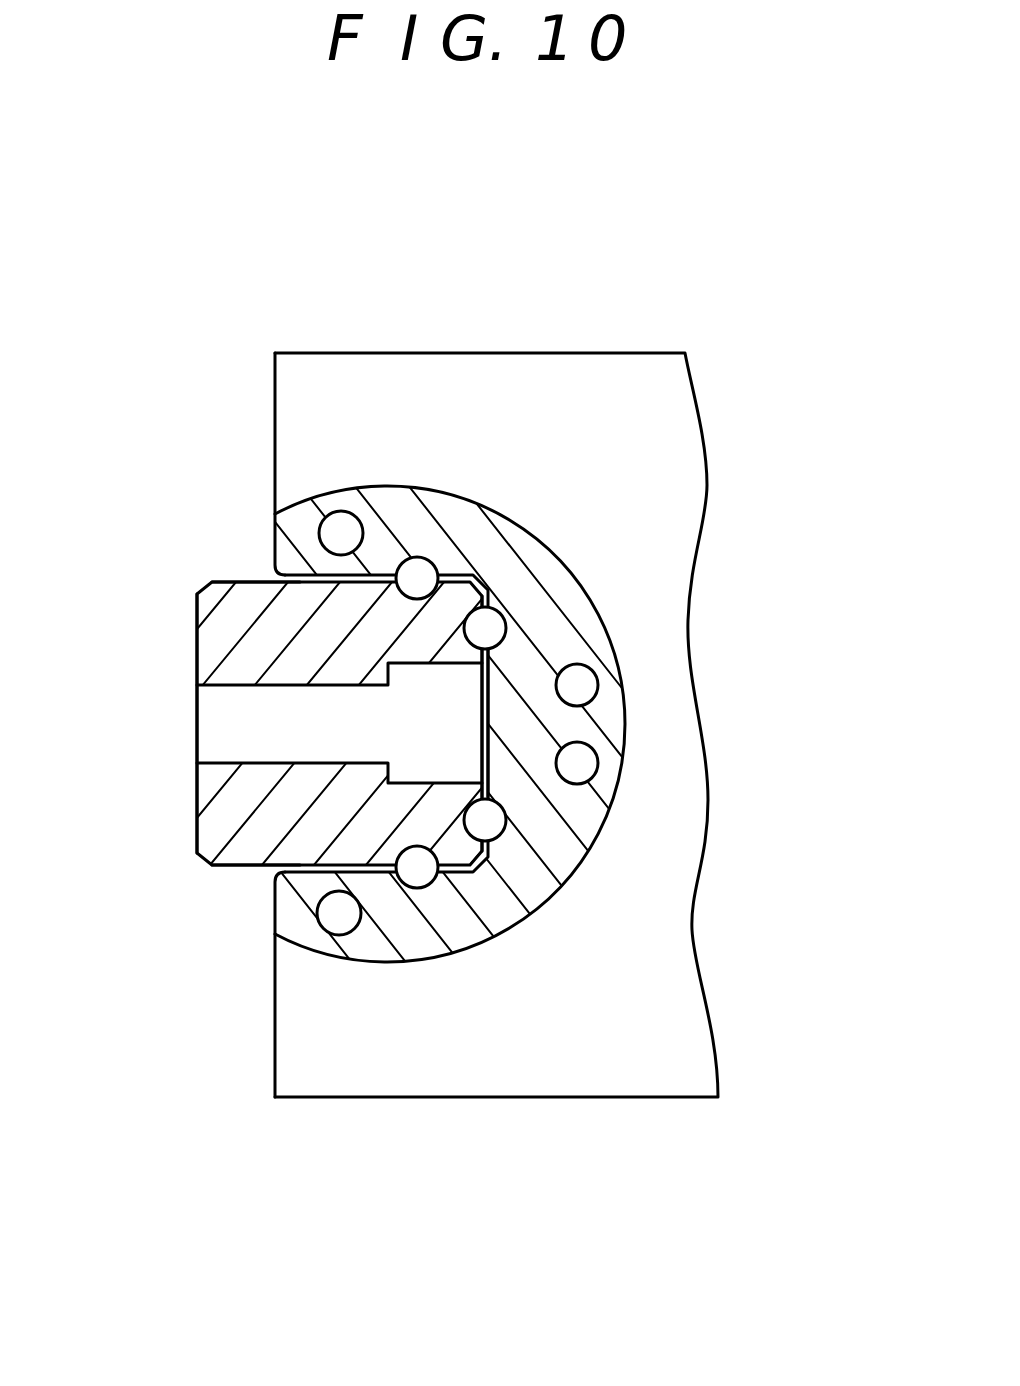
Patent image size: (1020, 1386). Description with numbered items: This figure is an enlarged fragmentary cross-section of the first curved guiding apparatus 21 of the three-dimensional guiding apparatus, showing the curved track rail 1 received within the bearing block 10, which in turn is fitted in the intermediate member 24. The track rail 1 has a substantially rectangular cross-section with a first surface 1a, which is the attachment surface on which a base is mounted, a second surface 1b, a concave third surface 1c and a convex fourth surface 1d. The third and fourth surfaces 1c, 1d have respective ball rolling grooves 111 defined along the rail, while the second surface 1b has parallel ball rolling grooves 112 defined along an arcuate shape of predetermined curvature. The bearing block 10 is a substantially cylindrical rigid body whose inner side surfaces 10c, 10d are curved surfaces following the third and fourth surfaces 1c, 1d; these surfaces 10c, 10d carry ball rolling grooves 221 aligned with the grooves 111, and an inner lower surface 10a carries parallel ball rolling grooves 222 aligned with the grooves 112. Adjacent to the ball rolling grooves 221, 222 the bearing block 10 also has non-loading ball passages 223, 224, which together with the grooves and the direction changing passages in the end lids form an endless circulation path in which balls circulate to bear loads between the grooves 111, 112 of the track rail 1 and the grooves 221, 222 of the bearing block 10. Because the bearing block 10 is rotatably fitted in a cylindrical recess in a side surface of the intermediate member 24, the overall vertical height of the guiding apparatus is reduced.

The curved track rail 1 is at (423, 756).
The first surface (attachment surface) 1a is at (197, 668).
The second surface 1b is at (490, 650).
The third surface 1c is at (258, 872).
The fourth surface 1d is at (237, 582).
The bearing block 10 is at (503, 781).
The inner lower surface 10a is at (490, 723).
The inner side surface (third surface) 10c is at (275, 973).
The inner side surface (fourth surface) 10d is at (362, 578).
The first curved guiding apparatus 21 is at (544, 729).
The intermediate member 24 is at (623, 1052).
The ball rolling grooves 111 is at (405, 562).
The ball rolling grooves 112 is at (465, 630).
The ball rolling grooves 221 is at (413, 566).
The ball rolling grooves 222 is at (500, 628).
The non-loading ball passage 223 is at (340, 520).
The non-loading ball passage 224 is at (580, 687).